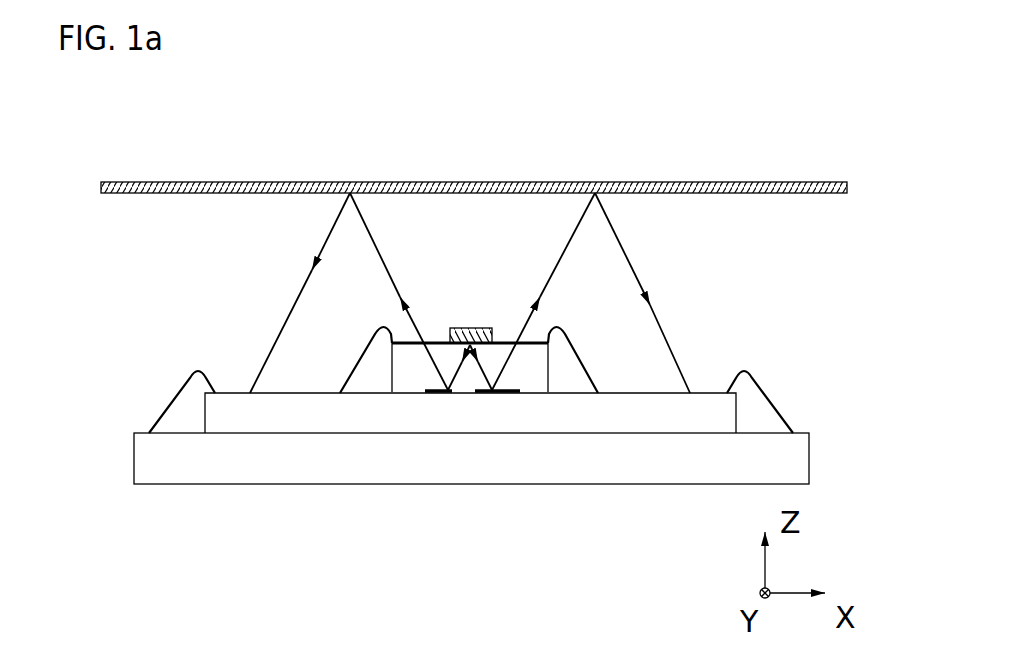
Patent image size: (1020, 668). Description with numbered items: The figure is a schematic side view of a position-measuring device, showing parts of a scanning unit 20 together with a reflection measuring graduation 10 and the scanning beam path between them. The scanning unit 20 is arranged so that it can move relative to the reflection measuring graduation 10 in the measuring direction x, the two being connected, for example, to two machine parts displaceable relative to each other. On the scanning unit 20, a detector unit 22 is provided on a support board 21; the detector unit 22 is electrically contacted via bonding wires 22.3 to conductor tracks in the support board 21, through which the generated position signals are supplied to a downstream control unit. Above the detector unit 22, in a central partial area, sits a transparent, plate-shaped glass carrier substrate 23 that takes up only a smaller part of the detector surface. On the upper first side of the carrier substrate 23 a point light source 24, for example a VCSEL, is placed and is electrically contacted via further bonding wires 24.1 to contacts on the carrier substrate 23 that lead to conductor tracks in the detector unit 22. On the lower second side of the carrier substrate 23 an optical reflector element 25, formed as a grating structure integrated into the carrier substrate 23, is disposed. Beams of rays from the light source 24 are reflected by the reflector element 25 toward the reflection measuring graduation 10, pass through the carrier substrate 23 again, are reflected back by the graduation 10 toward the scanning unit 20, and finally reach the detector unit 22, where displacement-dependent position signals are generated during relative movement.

The reflection measuring graduation 10 is at (98, 208).
The scanning unit 20 is at (120, 466).
The support board 21 is at (430, 465).
The detector unit 22 is at (353, 412).
The bonding wires 22.3 is at (178, 385).
The carrier substrate 23 is at (528, 372).
The light source 24 is at (474, 330).
The further bonding wires 24.1 is at (364, 346).
The optical reflector element 25 is at (470, 393).